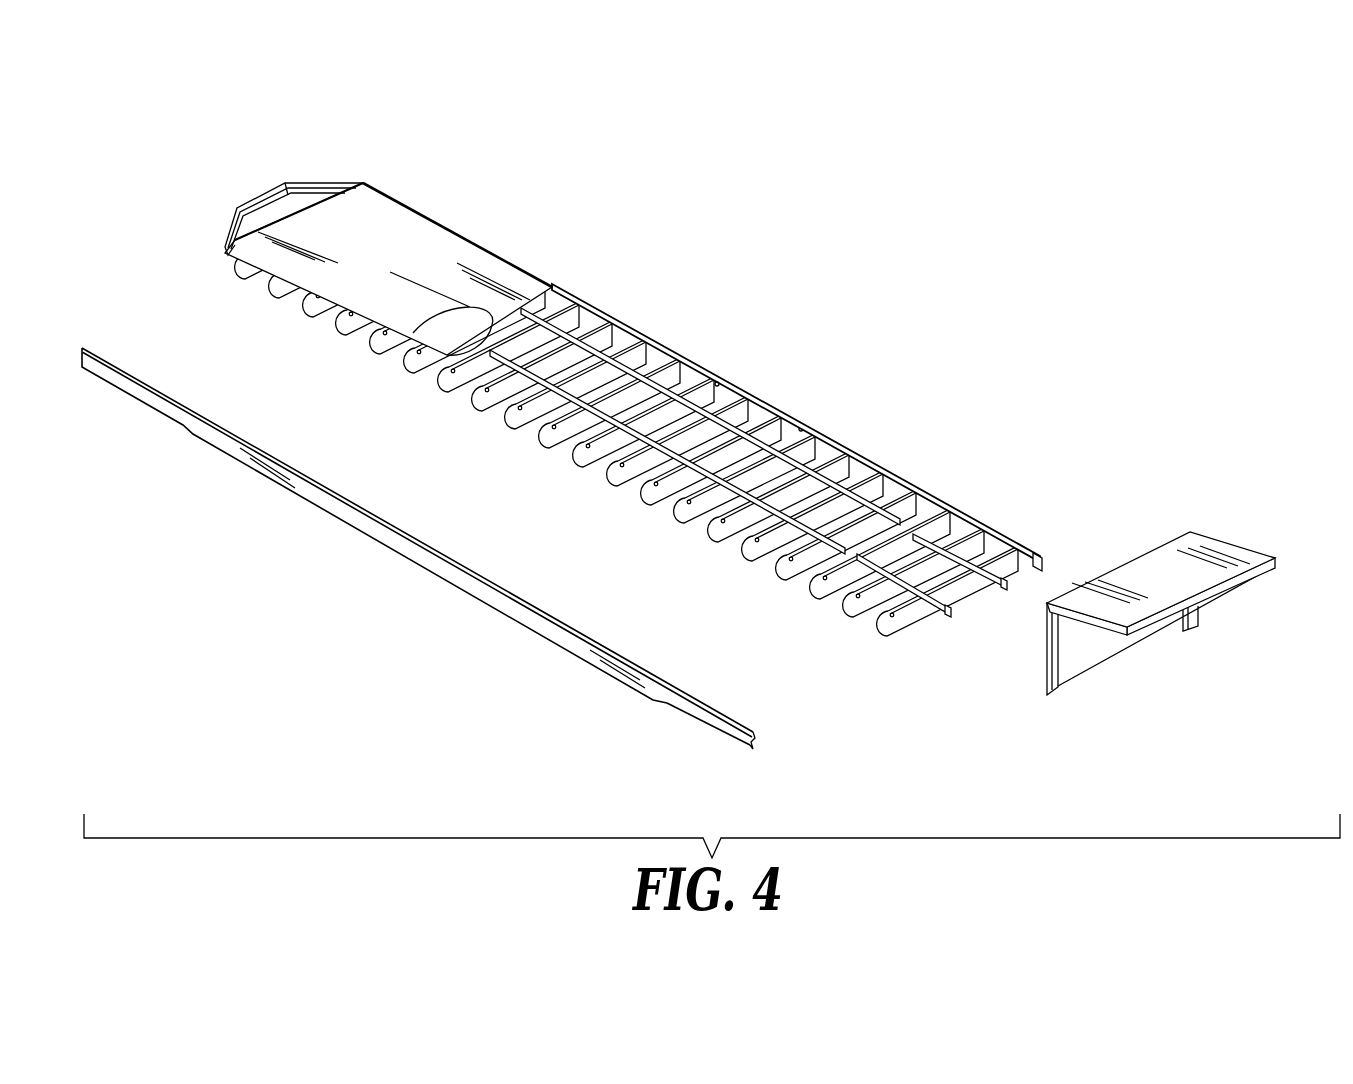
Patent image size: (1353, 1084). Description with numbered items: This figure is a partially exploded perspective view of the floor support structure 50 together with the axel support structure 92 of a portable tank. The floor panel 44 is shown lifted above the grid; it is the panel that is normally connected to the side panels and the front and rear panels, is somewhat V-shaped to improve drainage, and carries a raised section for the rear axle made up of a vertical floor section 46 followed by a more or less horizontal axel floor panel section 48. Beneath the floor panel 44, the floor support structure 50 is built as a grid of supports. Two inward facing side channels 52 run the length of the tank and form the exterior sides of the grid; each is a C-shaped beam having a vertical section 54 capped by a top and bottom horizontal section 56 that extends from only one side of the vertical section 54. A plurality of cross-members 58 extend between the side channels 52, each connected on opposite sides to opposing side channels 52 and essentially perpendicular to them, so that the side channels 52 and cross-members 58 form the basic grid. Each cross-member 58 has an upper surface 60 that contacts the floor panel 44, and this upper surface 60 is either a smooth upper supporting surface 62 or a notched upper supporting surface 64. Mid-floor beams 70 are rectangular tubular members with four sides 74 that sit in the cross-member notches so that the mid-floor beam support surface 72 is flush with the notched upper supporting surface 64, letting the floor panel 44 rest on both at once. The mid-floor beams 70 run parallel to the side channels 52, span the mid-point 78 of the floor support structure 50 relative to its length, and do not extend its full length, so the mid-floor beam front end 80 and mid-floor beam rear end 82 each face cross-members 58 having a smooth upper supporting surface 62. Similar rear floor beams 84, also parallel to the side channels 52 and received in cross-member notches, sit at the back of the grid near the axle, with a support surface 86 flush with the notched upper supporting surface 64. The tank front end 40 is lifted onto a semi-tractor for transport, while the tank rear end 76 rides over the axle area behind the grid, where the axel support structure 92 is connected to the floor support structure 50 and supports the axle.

The tank front end 40 is at (272, 192).
The floor panel 44 is at (427, 218).
The vertical floor section 46 is at (1157, 630).
The axel floor panel section 48 is at (1158, 577).
The floor support structure 50 is at (822, 330).
The side channels 52 is at (413, 547).
The vertical section 54 is at (742, 733).
The top and bottom horizontal section 56 is at (752, 748).
The cross-members 58 is at (753, 548).
The upper surface 60 is at (880, 460).
The smooth upper supporting surface 62 is at (828, 443).
The notched upper supporting surface 64 is at (572, 300).
The mid-floor beams 70 is at (517, 412).
The mid-floor beam support surface 72 is at (440, 340).
The sides of the mid-floor beam 74 is at (490, 386).
The tank rear end 76 is at (1210, 598).
The mid-point 78 is at (717, 383).
The mid-floor beam front end 80 is at (522, 311).
The mid-floor beam rear end 82 is at (801, 426).
The rear floor beams 84 is at (835, 604).
The support surface 86 is at (942, 523).
The axel support structure 92 is at (1047, 633).